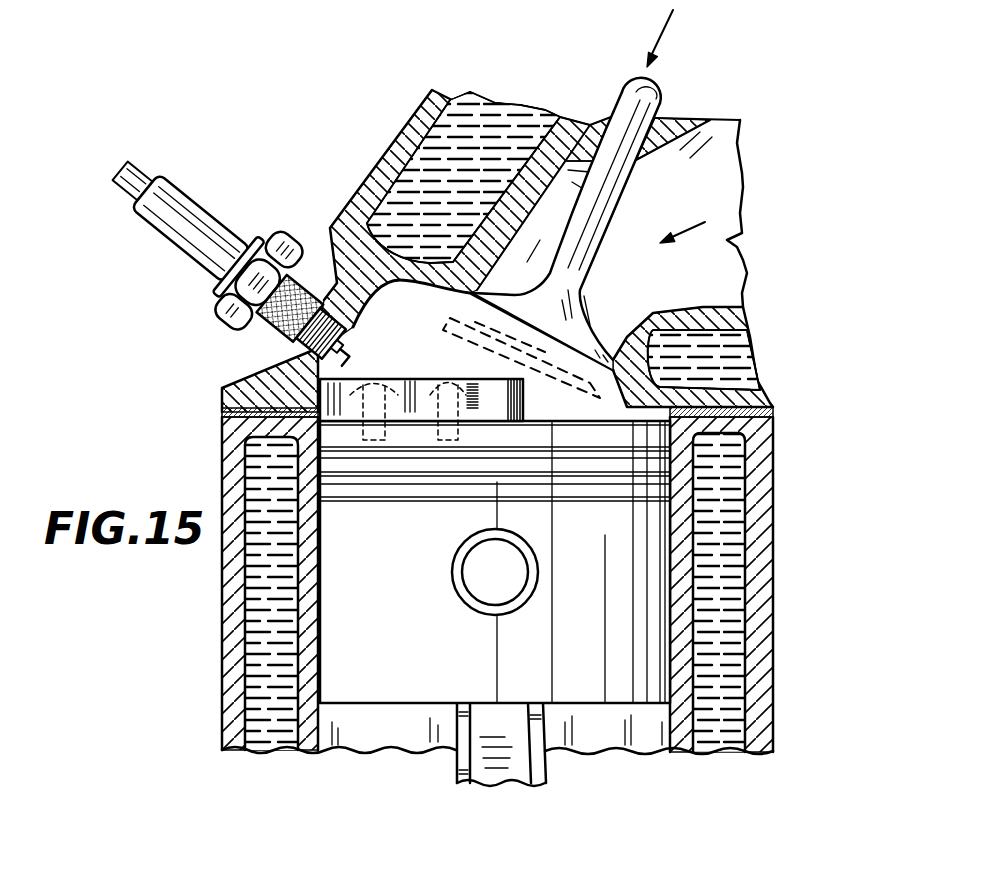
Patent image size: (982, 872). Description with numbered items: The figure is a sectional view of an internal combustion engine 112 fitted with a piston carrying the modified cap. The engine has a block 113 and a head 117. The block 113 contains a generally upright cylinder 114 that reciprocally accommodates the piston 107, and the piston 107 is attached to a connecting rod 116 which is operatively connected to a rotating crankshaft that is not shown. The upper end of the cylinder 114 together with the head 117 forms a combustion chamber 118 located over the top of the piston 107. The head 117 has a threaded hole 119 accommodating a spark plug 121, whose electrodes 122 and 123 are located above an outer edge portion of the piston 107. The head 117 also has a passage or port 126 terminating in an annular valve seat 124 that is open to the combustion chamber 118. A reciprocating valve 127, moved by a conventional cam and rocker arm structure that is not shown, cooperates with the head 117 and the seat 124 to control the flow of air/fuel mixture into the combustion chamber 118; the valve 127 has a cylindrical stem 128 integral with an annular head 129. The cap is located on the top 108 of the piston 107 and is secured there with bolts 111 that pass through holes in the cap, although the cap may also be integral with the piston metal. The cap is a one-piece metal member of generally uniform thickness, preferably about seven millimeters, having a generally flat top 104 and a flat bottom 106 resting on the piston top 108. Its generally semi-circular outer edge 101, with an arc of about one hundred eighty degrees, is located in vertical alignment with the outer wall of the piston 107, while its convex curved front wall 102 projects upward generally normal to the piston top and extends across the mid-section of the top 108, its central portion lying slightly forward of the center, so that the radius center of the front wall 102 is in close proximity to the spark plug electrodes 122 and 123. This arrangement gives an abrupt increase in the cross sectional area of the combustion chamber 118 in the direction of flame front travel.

The outer edge 101 is at (415, 546).
The front wall 102 is at (545, 448).
The top 104 is at (510, 380).
The bottom 106 is at (398, 422).
The piston 107 is at (400, 675).
The top of piston 108 is at (617, 413).
The bolts 111 is at (393, 383).
The internal combustion engine 112 is at (784, 156).
The block 113 is at (222, 621).
The cylinder 114 is at (420, 728).
The connecting rod 116 is at (548, 772).
The head 117 is at (404, 136).
The combustion chamber 118 is at (563, 412).
The threaded hole 119 is at (300, 362).
The spark plug 121 is at (182, 180).
The electrode 122 is at (360, 322).
The electrode 123 is at (363, 345).
The valve seat 124 is at (632, 330).
The port 126 is at (727, 240).
The valve 127 is at (633, 198).
The stem 128 is at (663, 107).
The head 129 is at (597, 313).